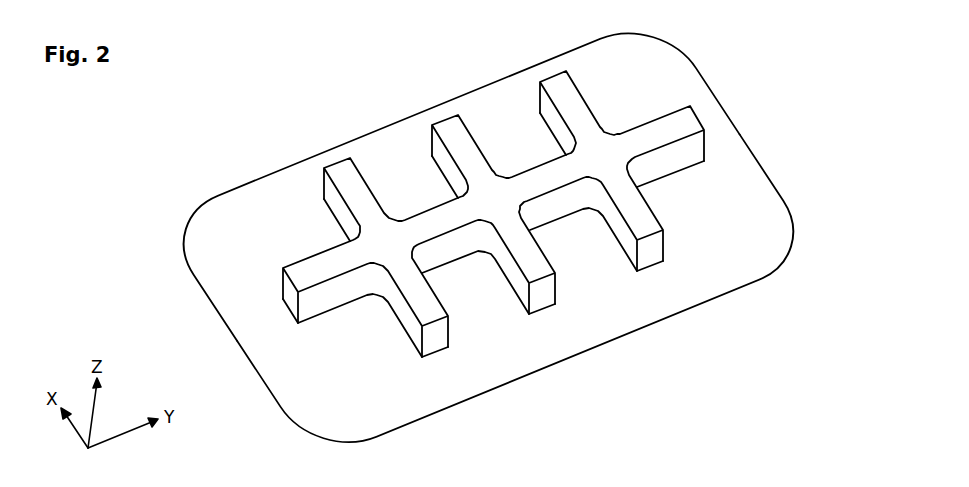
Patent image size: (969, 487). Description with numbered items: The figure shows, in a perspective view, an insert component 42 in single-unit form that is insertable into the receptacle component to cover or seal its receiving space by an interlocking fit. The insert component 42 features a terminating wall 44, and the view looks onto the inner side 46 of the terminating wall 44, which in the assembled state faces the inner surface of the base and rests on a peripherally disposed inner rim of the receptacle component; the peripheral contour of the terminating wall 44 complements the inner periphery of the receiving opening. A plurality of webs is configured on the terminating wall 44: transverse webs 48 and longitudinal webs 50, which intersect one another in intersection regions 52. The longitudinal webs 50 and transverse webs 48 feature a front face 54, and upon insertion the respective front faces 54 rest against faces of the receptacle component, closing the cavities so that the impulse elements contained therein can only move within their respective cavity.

The insert component 42 is at (806, 284).
The terminating wall 44 is at (310, 388).
The inner side 46 is at (725, 200).
The transverse webs 48 is at (548, 112).
The longitudinal webs 50 is at (440, 220).
The intersection regions 52 is at (455, 190).
The front face 54 is at (338, 176).